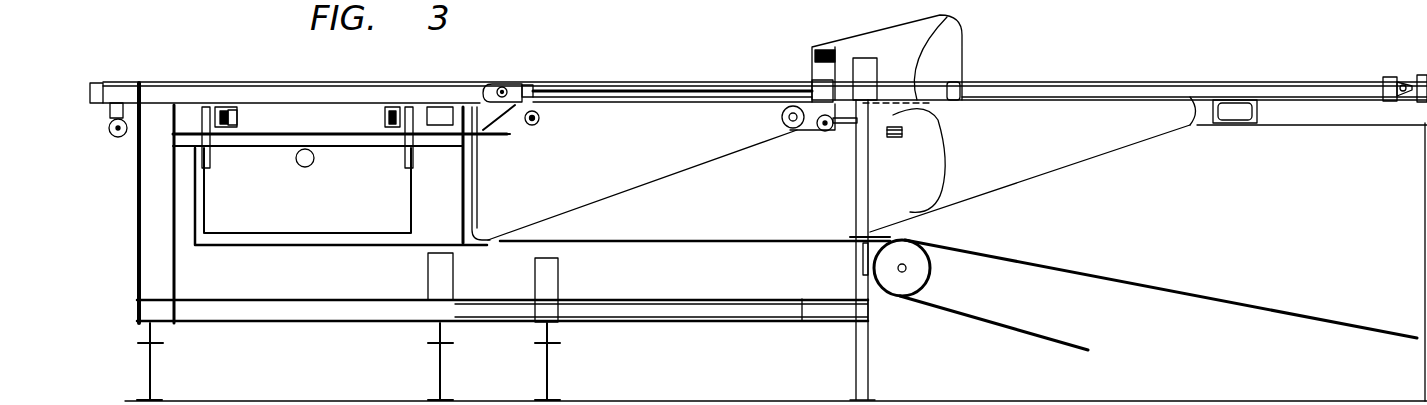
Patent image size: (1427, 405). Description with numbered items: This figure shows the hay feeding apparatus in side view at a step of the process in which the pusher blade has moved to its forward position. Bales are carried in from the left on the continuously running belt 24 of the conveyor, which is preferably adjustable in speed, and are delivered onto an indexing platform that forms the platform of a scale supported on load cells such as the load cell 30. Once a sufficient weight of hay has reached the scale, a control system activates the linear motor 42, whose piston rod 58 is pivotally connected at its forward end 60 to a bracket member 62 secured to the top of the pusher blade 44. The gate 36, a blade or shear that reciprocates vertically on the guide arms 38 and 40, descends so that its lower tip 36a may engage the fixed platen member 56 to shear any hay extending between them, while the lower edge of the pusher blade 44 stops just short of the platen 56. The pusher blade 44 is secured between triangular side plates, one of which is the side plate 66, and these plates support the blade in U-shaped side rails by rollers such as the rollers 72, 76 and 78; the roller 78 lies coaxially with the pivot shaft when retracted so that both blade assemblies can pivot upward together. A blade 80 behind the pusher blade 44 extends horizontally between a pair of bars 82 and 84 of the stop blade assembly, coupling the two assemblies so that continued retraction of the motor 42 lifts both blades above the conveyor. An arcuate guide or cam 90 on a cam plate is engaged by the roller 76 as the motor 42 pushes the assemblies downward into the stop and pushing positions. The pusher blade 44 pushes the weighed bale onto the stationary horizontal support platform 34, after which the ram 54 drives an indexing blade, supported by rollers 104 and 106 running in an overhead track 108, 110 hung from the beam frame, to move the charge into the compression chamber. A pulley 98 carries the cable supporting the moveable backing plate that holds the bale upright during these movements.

The belt 24 is at (1210, 298).
The load cell 30 is at (514, 255).
The stationary horizontal support platform 34 is at (290, 246).
The gate 36 is at (870, 210).
The lower tip 36a is at (857, 272).
The guide arm 38 is at (910, 213).
The guide arm 40 is at (1005, 172).
The linear motor 42 is at (1025, 83).
The pusher blade 44 is at (483, 193).
The ram 54 is at (318, 165).
The platen member 56 is at (855, 242).
The piston rod 58 is at (615, 90).
The pivotal connection 60 is at (512, 86).
The bracket member 62 is at (497, 83).
The side plate 66 is at (652, 175).
The roller 72 is at (970, 403).
The roller 76 is at (543, 123).
The roller 78 is at (782, 117).
The blade 80 is at (505, 136).
The bar 82 is at (933, 113).
The bar 84 is at (895, 138).
The arcuate guide 90 is at (925, 50).
The pulley 98 is at (115, 137).
The roller 104 is at (222, 108).
The roller 106 is at (395, 106).
The overhead track 108 is at (235, 108).
The overhead track 110 is at (390, 106).